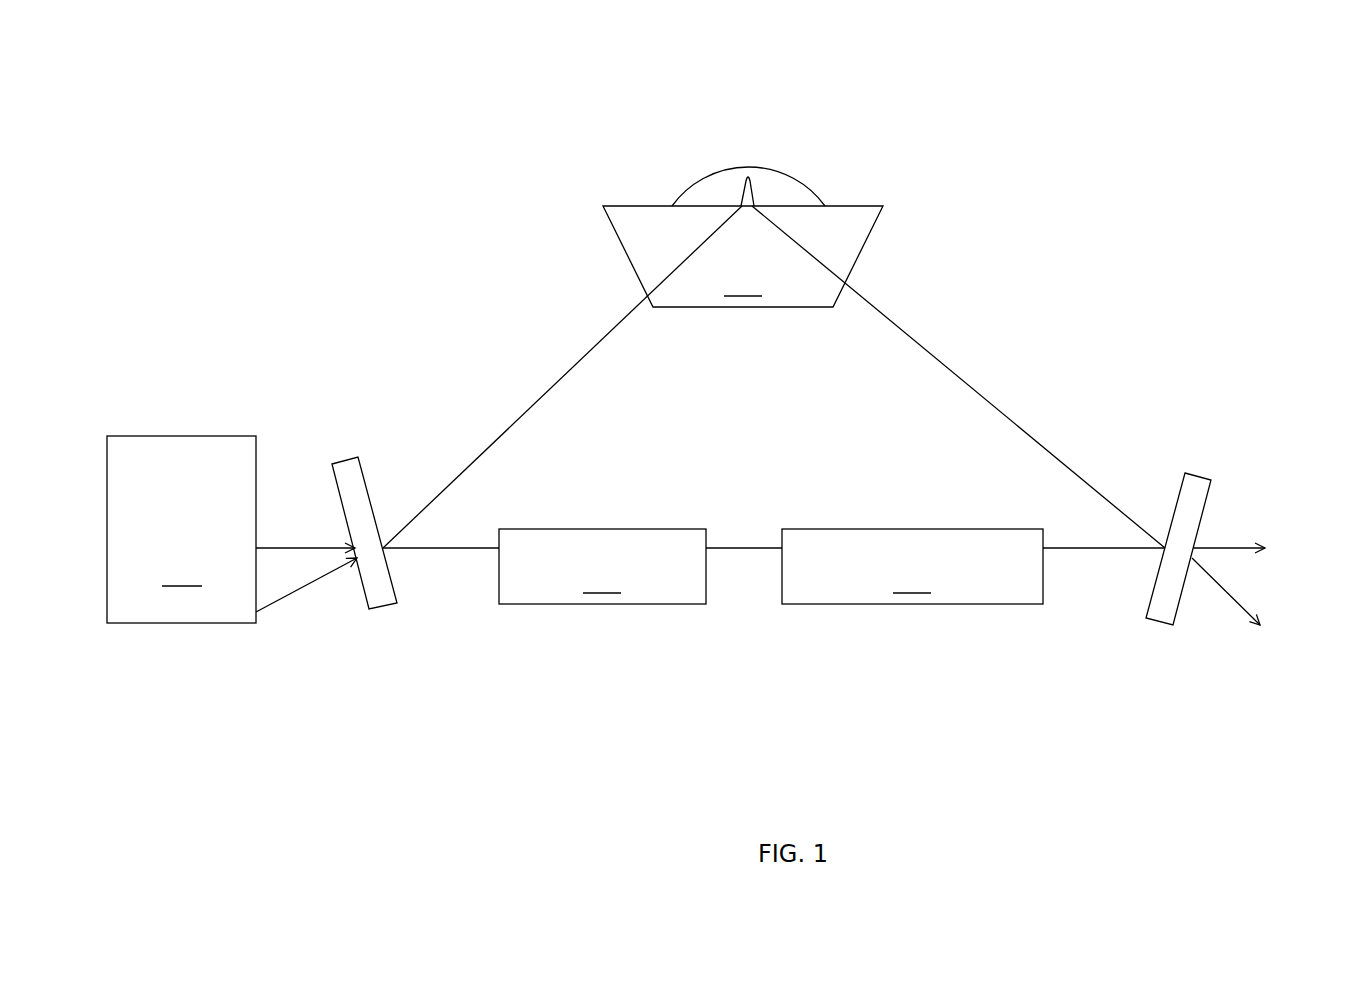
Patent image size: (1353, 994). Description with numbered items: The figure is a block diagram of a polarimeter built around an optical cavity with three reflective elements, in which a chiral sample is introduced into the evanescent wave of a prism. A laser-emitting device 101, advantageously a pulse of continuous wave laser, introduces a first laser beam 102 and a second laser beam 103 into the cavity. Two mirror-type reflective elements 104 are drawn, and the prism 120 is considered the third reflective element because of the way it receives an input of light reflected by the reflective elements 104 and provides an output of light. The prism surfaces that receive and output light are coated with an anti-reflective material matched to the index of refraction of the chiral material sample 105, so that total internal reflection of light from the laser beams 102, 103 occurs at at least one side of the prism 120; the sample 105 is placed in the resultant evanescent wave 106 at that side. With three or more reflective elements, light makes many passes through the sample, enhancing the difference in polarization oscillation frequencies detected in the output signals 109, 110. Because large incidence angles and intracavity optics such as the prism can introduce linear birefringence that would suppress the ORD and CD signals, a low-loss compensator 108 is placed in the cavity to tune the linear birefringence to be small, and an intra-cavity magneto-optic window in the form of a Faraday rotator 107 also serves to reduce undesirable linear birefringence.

The laser-emitting device 101 is at (181, 529).
The first laser beam 102 is at (305, 478).
The second laser beam 103 is at (313, 688).
The reflective element 104 is at (363, 460).
The chiral material sample 105 is at (787, 190).
The evanescent wave 106 is at (747, 190).
The Faraday rotator 107 is at (602, 566).
The compensator 108 is at (912, 566).
The output signal 109 is at (1288, 500).
The output signal 110 is at (1302, 670).
The prism 120 is at (743, 256).